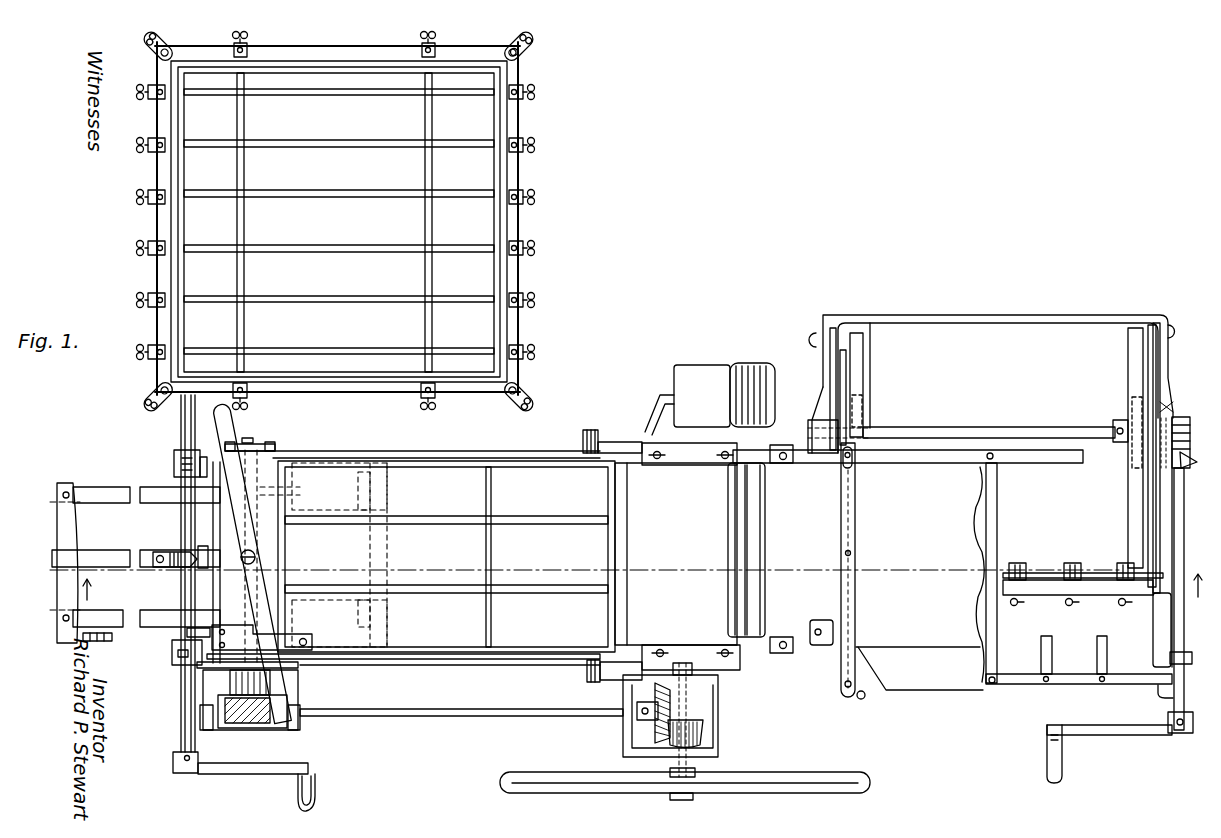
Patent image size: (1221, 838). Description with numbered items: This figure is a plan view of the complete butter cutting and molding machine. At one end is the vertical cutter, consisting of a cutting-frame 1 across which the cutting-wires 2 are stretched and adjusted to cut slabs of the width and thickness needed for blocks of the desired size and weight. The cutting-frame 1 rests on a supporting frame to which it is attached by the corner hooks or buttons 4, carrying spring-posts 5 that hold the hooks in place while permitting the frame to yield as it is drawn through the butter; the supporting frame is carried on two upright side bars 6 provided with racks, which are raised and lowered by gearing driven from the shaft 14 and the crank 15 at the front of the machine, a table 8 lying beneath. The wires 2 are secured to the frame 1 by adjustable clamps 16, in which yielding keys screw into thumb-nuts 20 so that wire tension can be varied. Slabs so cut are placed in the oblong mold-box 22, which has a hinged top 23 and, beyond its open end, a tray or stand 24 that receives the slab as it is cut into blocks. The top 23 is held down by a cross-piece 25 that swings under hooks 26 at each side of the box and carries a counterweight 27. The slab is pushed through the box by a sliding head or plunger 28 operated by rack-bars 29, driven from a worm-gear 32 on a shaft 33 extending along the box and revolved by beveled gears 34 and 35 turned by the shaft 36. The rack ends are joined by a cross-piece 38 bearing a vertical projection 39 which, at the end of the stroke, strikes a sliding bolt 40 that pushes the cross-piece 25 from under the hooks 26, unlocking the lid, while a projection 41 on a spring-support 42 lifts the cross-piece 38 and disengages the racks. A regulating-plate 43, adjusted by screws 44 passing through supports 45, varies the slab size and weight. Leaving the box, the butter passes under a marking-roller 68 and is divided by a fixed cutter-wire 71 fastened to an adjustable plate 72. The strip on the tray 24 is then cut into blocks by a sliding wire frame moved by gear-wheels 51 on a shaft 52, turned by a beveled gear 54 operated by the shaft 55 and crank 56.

The cutting-frame 1 is at (160, 268).
The cutting-wires 2 is at (246, 226).
The corner hooks or buttons 4 is at (530, 40).
The spring-posts 5 is at (521, 53).
The upright side bars 6 is at (621, 571).
The table 8 is at (339, 222).
The shaft 14 is at (174, 445).
The crank 15 is at (260, 780).
The adjustable supports or clamps 16 is at (527, 144).
The thumb-nut 20 is at (540, 191).
The mold-box 22 is at (505, 438).
The lid or hinged top 23 is at (585, 556).
The tray or stand 24 is at (954, 506).
The cross-piece 25 is at (233, 422).
The hooks 26 is at (278, 447).
The counterweight 27 is at (705, 374).
The sliding head or plunger 28 is at (380, 502).
The rack-bars 29 is at (130, 487).
The worm-gear 32 is at (252, 730).
The shaft 33 is at (503, 712).
The beveled gear 34 is at (655, 730).
The beveled gear 35 is at (704, 737).
The shaft 36 is at (695, 762).
The cross-piece 38 is at (76, 563).
The vertical projection 39 is at (106, 642).
The sliding bolt 40 is at (172, 645).
The projection 41 is at (176, 551).
The spring-support 42 is at (205, 550).
The regulating and adjusting plate 43 is at (677, 566).
The screws 44 is at (653, 461).
The supports 45 is at (689, 453).
The gear-wheels 51 is at (866, 416).
The shaft 52 is at (969, 427).
The beveled gear 54 is at (1187, 449).
The shaft 55 is at (1184, 625).
The crank 56 is at (1103, 737).
The marking-roller 68 is at (762, 549).
The fixed cutter-wire 71 is at (852, 558).
The adjustable plate 72 is at (850, 523).